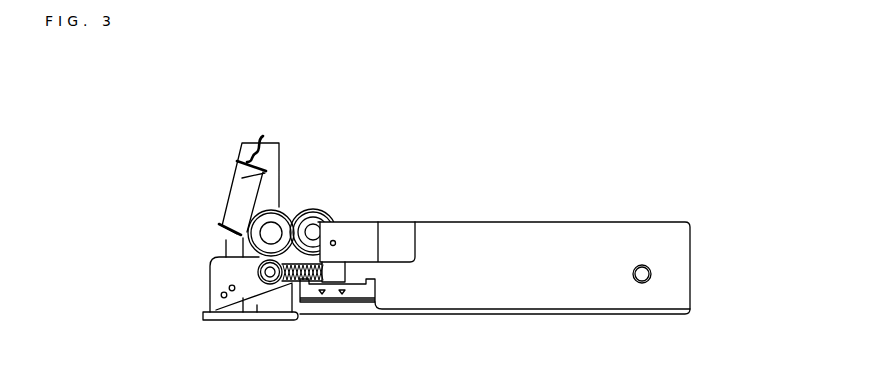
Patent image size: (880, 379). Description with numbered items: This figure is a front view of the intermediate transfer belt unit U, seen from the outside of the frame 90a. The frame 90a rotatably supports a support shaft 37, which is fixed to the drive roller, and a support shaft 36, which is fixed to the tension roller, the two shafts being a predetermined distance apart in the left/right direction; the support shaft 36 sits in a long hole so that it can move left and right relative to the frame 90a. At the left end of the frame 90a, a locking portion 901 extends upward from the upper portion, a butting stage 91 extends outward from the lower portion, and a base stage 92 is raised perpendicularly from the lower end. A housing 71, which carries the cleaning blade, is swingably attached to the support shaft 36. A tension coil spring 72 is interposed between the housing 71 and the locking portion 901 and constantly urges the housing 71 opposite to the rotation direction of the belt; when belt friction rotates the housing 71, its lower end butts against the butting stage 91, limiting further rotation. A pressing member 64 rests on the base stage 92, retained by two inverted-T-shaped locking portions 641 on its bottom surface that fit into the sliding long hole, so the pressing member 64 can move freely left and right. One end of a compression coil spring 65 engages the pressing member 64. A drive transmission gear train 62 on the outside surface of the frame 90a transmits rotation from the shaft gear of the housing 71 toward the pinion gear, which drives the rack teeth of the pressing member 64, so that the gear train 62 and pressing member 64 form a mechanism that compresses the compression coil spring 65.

The locking portion 901 is at (267, 140).
The drive transmission gear train 62 is at (301, 197).
The pressing member 64 is at (334, 270).
The frame 90a is at (562, 243).
The intermediate transfer belt unit U is at (623, 194).
The tension coil spring 72 is at (240, 197).
The housing 71 is at (206, 277).
The butting stage 91 is at (230, 322).
The support shaft 36 is at (254, 287).
The compression coil spring 65 is at (297, 285).
The locking portions 641 is at (343, 294).
The base stage 92 is at (364, 308).
The support shaft 37 is at (643, 284).